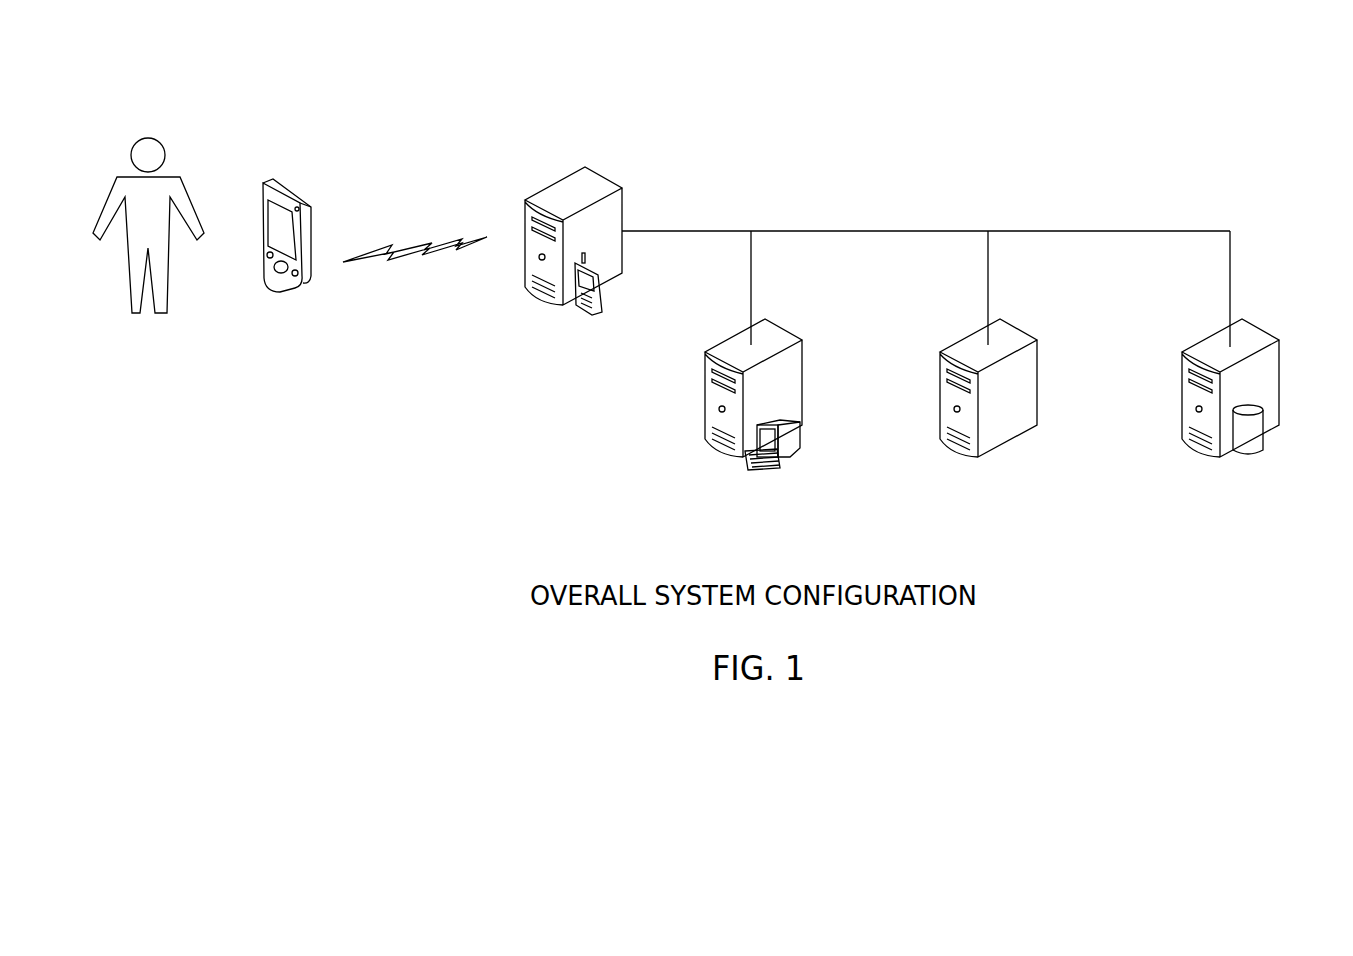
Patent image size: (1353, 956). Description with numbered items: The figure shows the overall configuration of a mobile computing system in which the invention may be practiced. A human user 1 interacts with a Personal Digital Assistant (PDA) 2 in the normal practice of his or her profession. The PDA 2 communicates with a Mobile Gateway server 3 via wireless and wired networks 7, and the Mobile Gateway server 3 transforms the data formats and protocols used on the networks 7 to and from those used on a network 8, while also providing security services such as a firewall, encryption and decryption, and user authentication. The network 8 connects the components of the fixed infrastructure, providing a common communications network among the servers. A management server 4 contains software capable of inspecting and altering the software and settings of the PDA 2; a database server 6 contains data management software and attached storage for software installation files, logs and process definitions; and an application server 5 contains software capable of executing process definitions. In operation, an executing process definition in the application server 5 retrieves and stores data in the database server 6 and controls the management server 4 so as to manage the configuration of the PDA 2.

The human user 1 is at (152, 138).
The Personal Digital Assistant (PDA) 2 is at (292, 188).
The Mobile Gateway server 3 is at (600, 173).
The management server 4 is at (780, 328).
The application server 5 is at (1017, 327).
The database server 6 is at (1257, 327).
The wireless and wired networks 7 is at (402, 258).
The network 8 is at (868, 231).